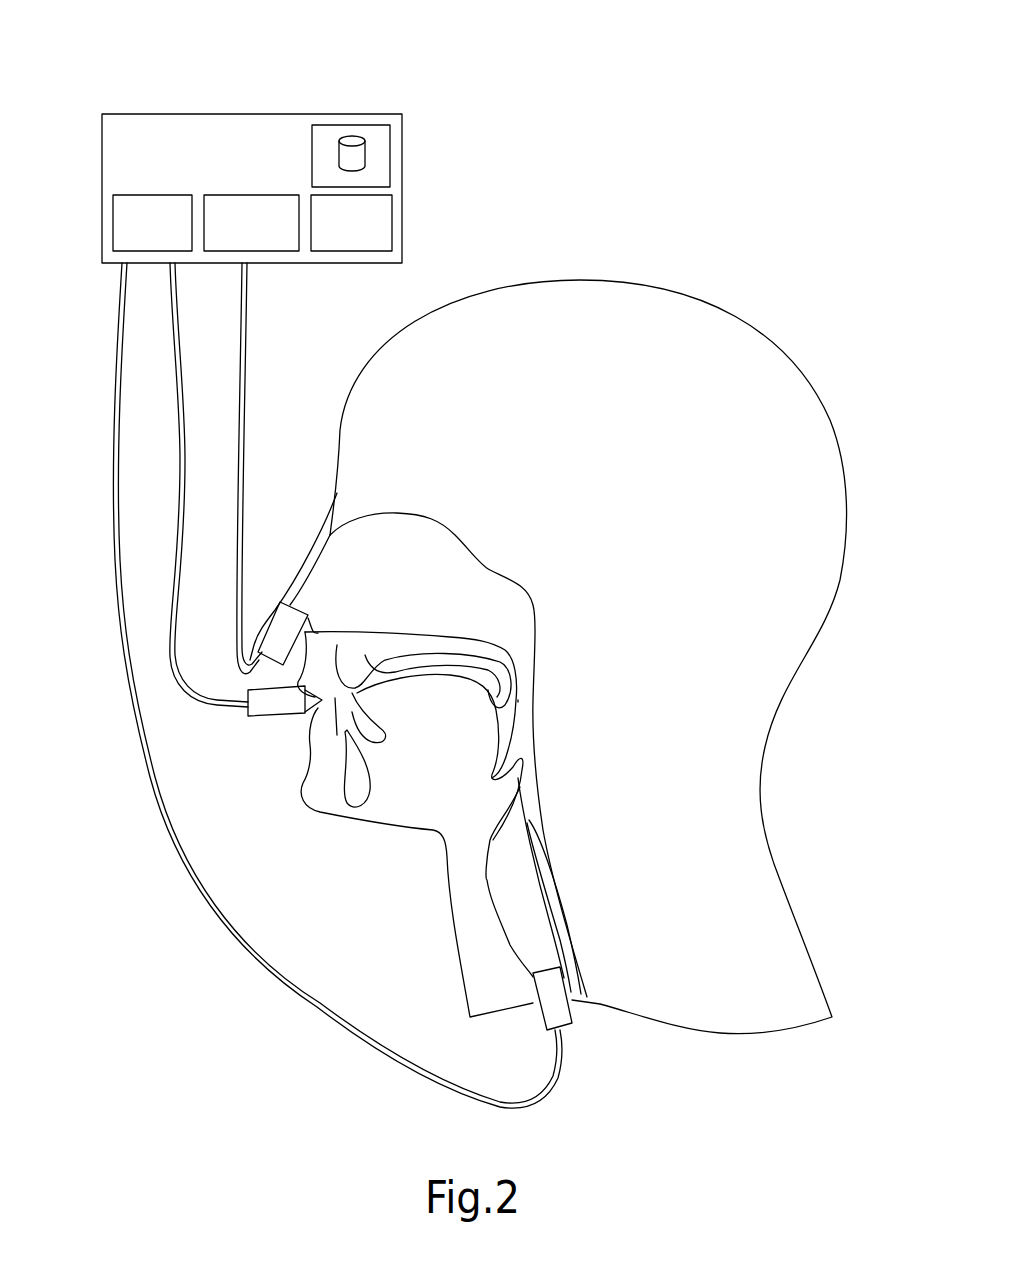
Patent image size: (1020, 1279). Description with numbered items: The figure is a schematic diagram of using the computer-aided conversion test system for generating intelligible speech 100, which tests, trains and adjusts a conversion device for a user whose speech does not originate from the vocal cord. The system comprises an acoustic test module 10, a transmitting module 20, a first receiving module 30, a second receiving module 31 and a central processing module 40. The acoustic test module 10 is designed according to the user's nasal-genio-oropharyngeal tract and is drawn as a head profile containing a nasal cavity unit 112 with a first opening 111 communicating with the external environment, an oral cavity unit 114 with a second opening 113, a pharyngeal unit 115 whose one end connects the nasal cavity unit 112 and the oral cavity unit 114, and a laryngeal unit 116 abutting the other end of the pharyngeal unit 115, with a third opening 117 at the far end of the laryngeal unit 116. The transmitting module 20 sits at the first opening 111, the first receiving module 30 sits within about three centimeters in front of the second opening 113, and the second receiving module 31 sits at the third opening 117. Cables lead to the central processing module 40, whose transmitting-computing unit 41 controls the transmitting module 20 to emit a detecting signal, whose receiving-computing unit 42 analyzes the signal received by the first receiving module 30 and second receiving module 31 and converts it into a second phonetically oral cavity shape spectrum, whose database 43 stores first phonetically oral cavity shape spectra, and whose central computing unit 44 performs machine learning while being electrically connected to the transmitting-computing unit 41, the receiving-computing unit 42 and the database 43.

The acoustic test module 10 is at (768, 328).
The transmitting module 20 is at (292, 618).
The first receiving module 30 is at (252, 713).
The second receiving module 31 is at (560, 1013).
The central processing module 40 is at (247, 106).
The transmitting-computing unit 41 is at (275, 263).
The receiving-computing unit 42 is at (112, 222).
The database 43 is at (352, 125).
The central computing unit 44 is at (392, 222).
The computer-aided conversion test system for generating intelligible speech 100 is at (645, 203).
The first opening 111 is at (272, 636).
The nasal cavity unit 112 is at (395, 547).
The second opening 113 is at (312, 703).
The oral cavity unit 114 is at (430, 662).
The pharyngeal unit 115 is at (525, 720).
The laryngeal unit 116 is at (517, 883).
The third opening 117 is at (560, 976).